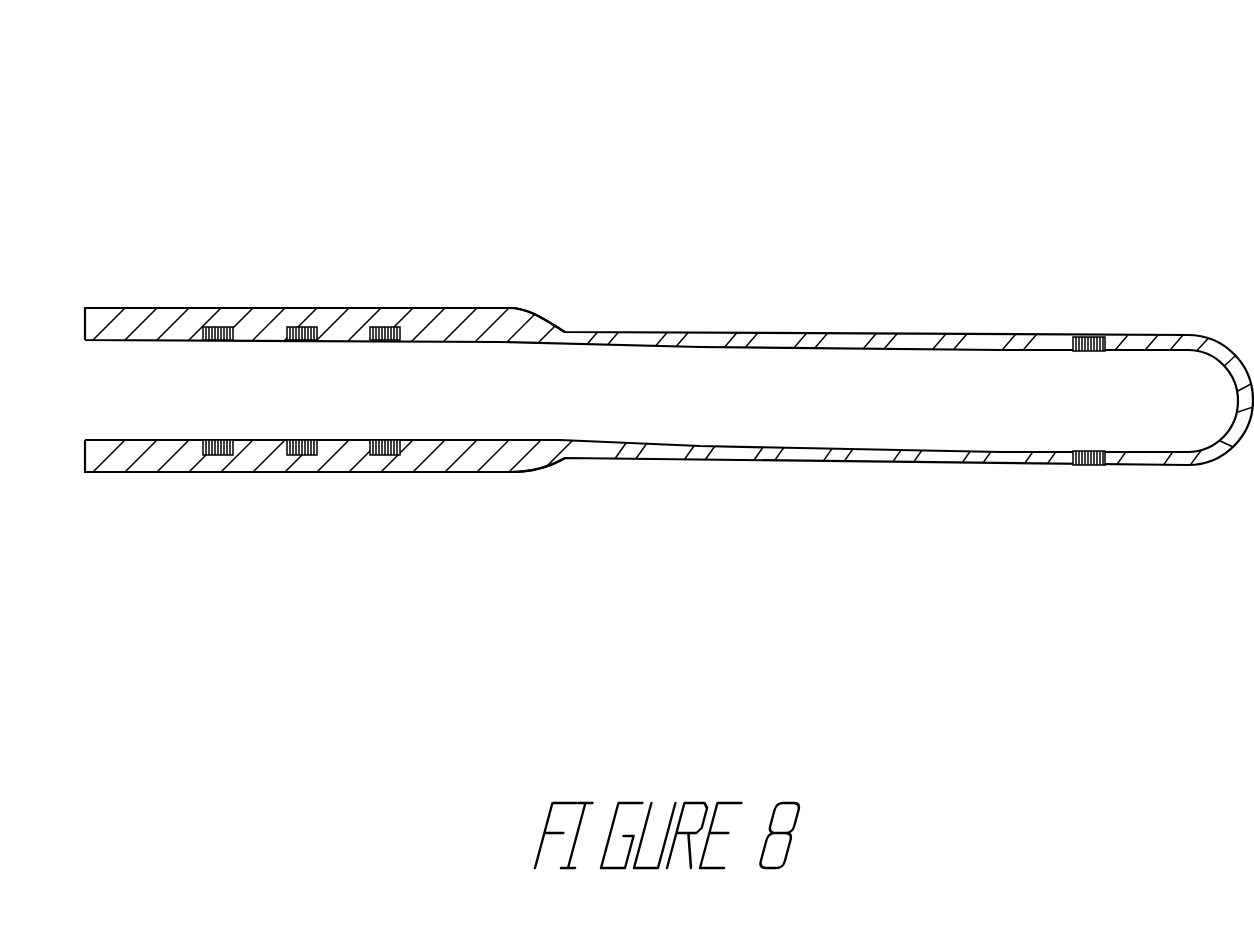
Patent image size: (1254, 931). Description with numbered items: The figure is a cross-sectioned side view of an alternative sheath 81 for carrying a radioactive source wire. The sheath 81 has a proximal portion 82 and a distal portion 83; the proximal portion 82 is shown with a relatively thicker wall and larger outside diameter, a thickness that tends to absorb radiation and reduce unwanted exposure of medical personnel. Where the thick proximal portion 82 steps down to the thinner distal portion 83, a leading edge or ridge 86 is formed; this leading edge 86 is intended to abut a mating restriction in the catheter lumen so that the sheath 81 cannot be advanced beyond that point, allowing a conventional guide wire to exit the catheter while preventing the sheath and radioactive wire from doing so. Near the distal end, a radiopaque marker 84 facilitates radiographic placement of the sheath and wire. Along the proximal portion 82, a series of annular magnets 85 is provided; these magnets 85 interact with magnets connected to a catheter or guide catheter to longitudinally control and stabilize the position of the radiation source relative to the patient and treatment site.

The sheath 81 is at (669, 308).
The proximal portion 82 is at (306, 268).
The distal portion 83 is at (945, 292).
The radiopaque marker 84 is at (1087, 466).
The annular magnets 85 is at (218, 456).
The leading edge 86 is at (533, 468).